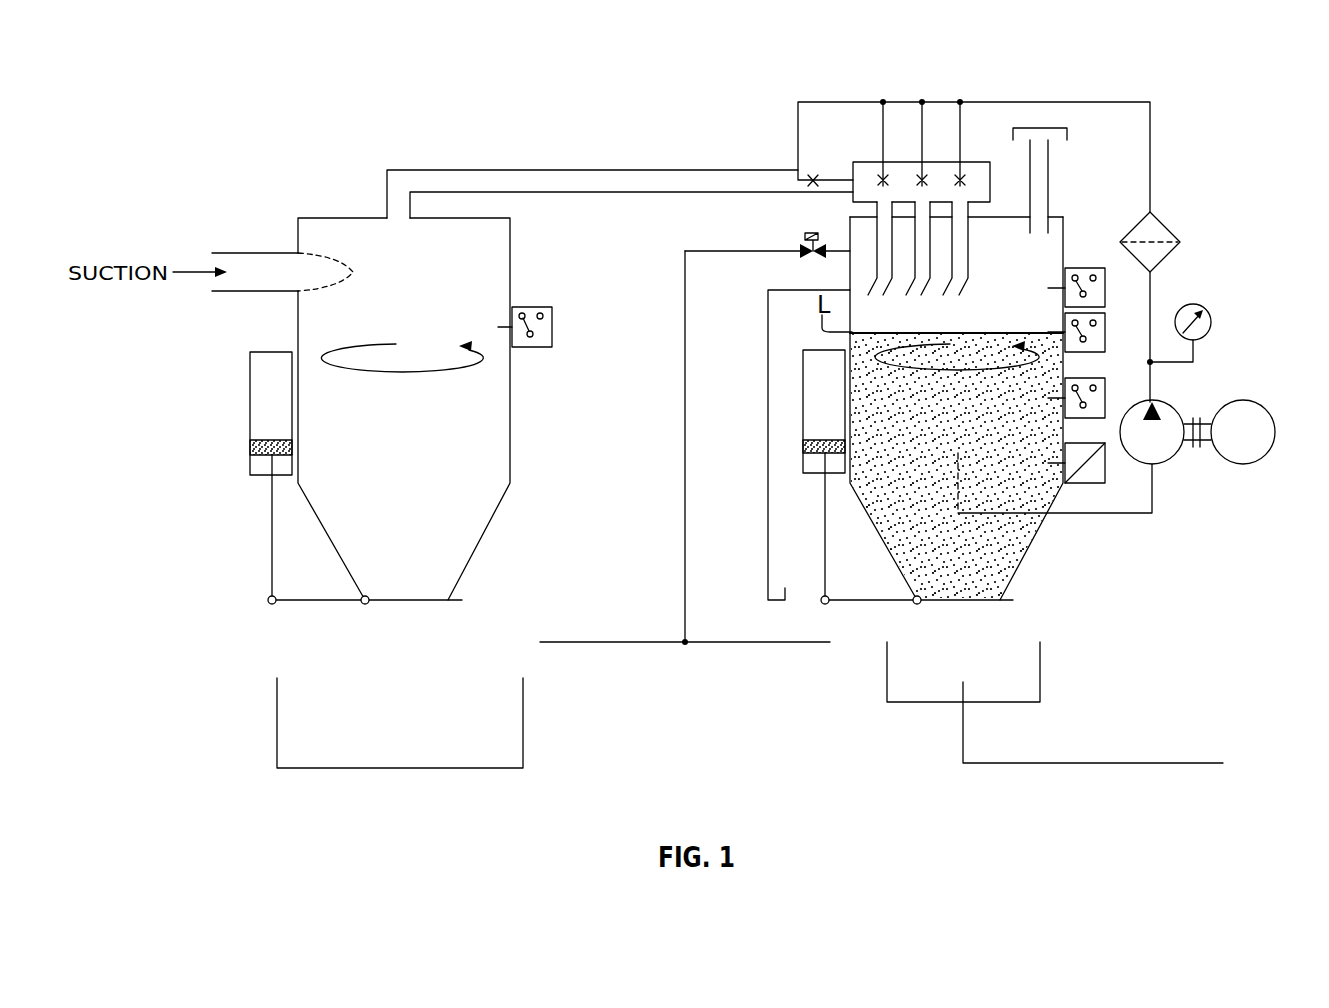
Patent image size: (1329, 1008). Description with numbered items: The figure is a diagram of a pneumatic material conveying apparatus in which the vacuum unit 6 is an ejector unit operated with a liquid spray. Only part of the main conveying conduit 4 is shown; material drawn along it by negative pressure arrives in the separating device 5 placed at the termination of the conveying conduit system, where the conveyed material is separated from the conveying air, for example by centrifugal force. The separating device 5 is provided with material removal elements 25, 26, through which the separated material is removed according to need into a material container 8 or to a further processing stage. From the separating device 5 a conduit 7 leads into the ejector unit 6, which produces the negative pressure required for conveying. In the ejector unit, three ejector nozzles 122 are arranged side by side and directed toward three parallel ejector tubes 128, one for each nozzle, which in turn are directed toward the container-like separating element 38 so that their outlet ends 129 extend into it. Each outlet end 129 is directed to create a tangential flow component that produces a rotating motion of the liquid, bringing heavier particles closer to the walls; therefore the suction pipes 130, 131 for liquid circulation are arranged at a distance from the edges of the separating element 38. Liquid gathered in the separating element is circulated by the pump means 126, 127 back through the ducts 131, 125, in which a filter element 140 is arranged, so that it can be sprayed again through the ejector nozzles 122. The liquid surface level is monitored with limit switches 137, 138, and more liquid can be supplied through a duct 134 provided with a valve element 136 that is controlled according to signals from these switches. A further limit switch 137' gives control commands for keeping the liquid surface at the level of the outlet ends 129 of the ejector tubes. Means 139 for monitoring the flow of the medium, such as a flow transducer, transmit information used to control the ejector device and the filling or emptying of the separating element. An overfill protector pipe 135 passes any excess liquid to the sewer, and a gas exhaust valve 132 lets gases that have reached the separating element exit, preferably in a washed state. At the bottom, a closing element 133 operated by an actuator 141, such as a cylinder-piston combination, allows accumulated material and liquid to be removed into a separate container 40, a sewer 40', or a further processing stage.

The main conveying conduit 4 is at (248, 252).
The separating device 5 is at (503, 438).
The vacuum unit 6 is at (826, 80).
The conduit 7 is at (622, 170).
The material container 8 is at (523, 720).
The material removal element 25 is at (430, 600).
The material removal element 26 is at (250, 388).
The separating element 38 is at (1003, 573).
The separate container 40 is at (995, 672).
The sewer 40' is at (1093, 722).
The ejector nozzle 122 is at (918, 180).
The duct 125 is at (1085, 102).
The pump means 126 is at (1153, 462).
The pump means 127 is at (1243, 464).
The ejector tube 128 is at (877, 227).
The outlet end of ejector tube 129 is at (868, 295).
The suction pipe 130 is at (955, 493).
The suction pipe 131 is at (1033, 515).
The gas exhaust valve 132 is at (1052, 153).
The closing element 133 is at (985, 600).
The duct 134 is at (683, 312).
The overfill protector pipe 135 is at (768, 383).
The valve 136 is at (805, 245).
The limit switch 137 is at (1127, 313).
The limit switch 137' is at (1085, 257).
The limit switch 138 is at (1080, 378).
The means for monitoring flow 139 is at (1085, 483).
The filter element 140 is at (1163, 227).
The actuator 141 is at (803, 380).